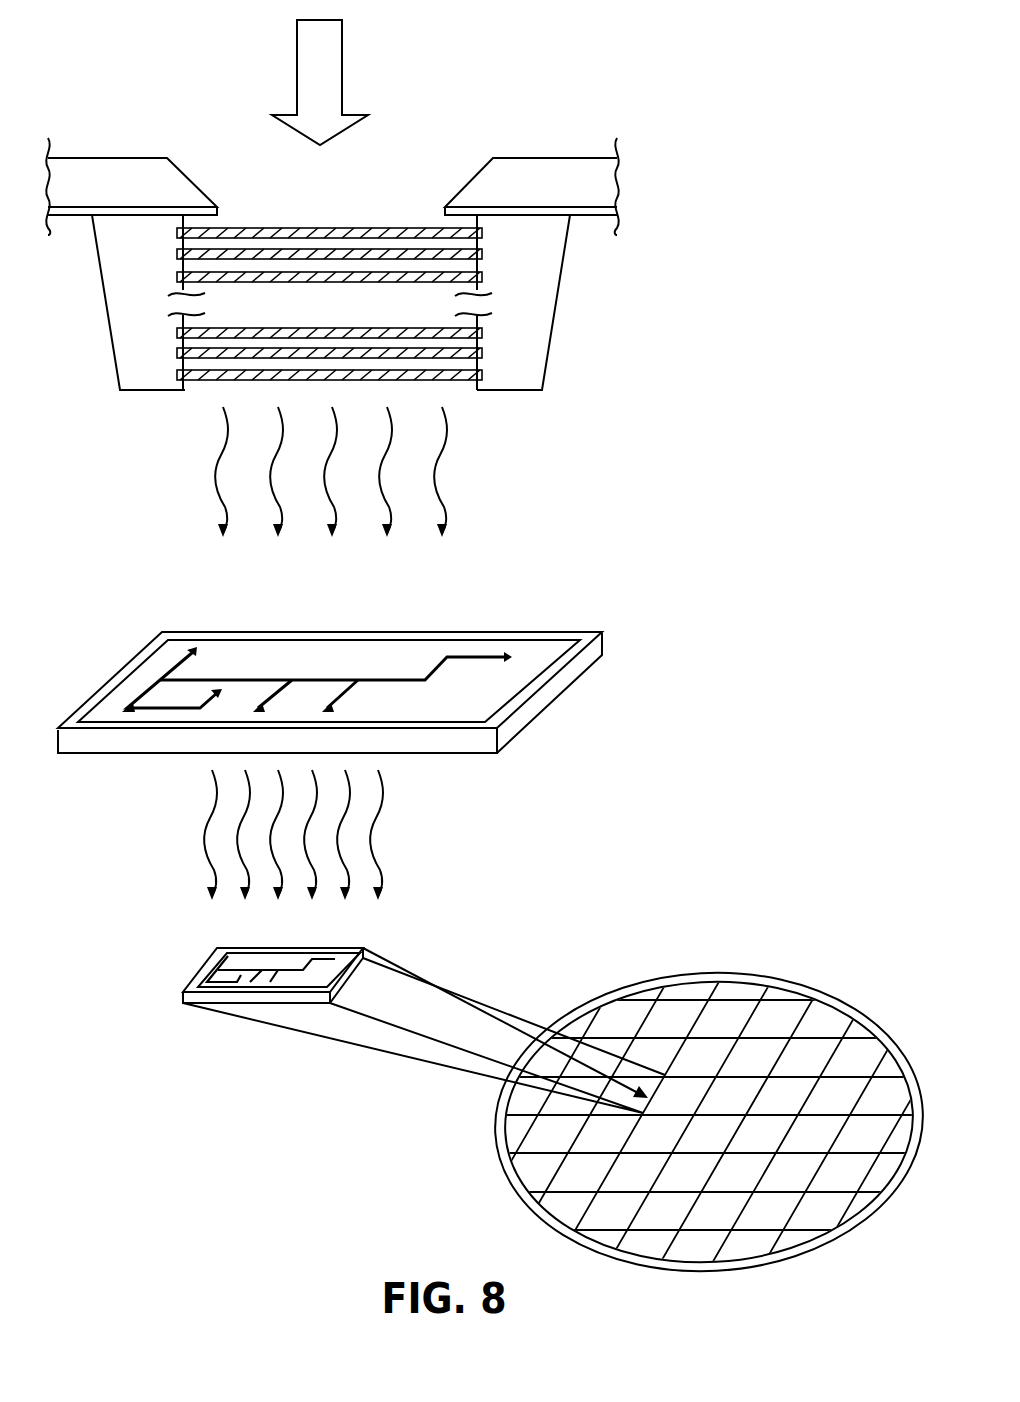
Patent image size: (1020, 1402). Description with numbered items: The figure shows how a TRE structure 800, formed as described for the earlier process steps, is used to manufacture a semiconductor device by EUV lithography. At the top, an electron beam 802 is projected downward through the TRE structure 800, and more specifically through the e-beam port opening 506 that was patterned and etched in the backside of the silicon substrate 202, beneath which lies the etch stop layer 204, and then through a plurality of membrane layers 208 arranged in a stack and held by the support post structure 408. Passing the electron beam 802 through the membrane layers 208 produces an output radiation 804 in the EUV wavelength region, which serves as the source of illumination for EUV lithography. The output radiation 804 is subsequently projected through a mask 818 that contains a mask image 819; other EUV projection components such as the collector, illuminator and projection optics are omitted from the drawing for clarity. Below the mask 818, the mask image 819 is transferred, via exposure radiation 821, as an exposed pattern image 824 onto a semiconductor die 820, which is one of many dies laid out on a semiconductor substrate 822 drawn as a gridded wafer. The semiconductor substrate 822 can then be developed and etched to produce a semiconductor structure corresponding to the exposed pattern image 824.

The TRE structure 800 is at (702, 181).
The electron beam 802 is at (333, 50).
The output radiation 804 is at (331, 492).
The silicon substrate 202 is at (509, 195).
The etch stop layer 204 is at (605, 212).
The membrane layers 208 is at (177, 375).
The support post structure 408 is at (509, 284).
The e-beam port opening 506 is at (461, 170).
The mask 818 is at (595, 655).
The mask image 819 is at (257, 680).
The semiconductor die 820 is at (555, 1040).
The exposure radiation 821 is at (257, 948).
The semiconductor substrate 822 is at (836, 990).
The exposed pattern image 824 is at (245, 968).